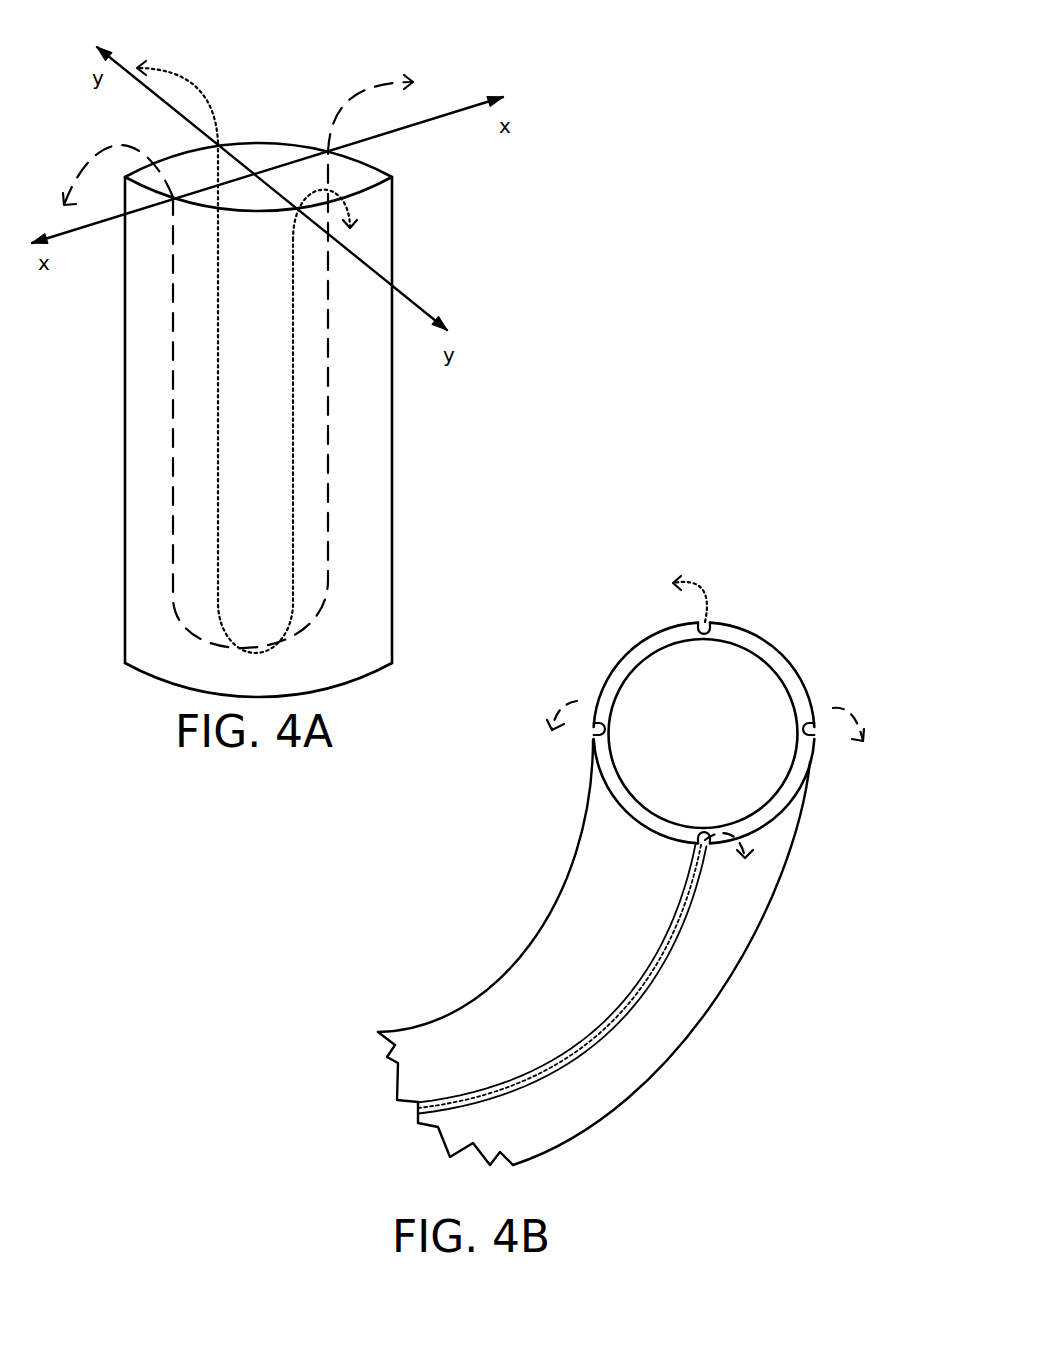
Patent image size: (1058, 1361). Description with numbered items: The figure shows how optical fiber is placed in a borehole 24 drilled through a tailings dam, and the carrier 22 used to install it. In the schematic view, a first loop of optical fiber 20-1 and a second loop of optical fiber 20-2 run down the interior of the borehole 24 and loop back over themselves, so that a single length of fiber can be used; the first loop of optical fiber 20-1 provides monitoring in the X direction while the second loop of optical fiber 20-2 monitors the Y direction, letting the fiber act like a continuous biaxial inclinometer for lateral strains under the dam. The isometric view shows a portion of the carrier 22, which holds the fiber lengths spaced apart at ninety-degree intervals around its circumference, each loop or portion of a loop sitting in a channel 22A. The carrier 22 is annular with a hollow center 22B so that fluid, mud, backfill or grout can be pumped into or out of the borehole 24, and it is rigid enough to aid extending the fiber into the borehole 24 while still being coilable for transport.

In FIG. 4A, the first loop of optical fiber 20-1 is at (370, 80).
In FIG. 4A, the second loop of optical fiber 20-2 is at (190, 80).
In FIG. 4A, the borehole 24 is at (380, 472).
In FIG. 4B, the carrier 22 is at (745, 920).
In FIG. 4B, the channel 22A is at (597, 726).
In FIG. 4B, the hollow center 22B is at (683, 707).